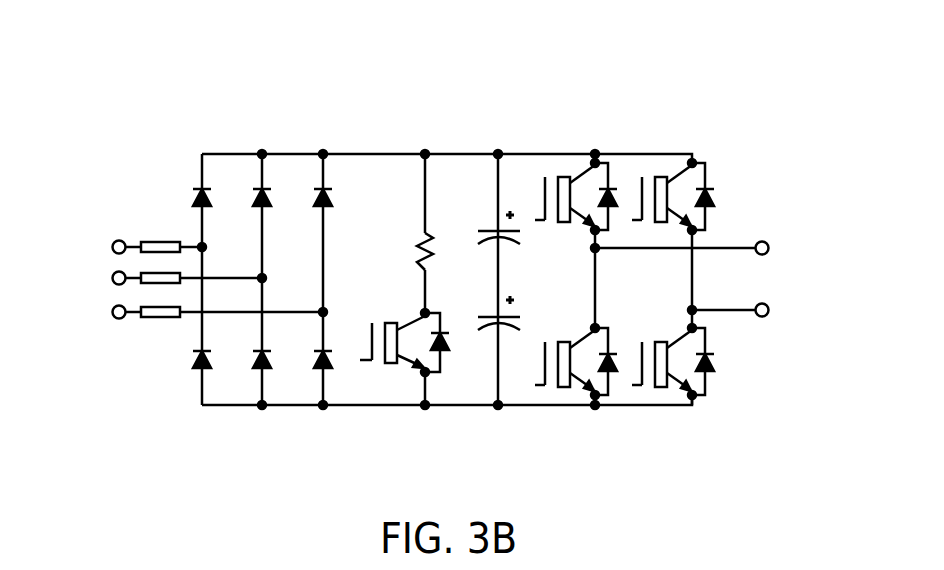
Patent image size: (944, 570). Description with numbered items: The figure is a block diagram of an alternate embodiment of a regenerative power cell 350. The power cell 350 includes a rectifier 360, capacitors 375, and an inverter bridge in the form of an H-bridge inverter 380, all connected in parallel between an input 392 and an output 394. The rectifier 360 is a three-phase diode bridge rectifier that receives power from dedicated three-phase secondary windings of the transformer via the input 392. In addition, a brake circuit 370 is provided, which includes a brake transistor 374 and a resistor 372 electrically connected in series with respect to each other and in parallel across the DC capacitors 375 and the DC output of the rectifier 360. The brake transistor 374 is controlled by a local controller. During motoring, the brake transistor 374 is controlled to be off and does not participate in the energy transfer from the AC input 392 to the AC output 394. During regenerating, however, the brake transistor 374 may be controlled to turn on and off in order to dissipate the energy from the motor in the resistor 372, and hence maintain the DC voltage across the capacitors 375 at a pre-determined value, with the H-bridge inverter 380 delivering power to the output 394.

The power cell 350 is at (173, 72).
The rectifier 360 is at (336, 120).
The brake circuit 370 is at (458, 120).
The resistor 372 is at (420, 245).
The brake transistor 374 is at (403, 313).
The capacitors 375 is at (538, 120).
The H-bridge inverter 380 is at (703, 120).
The input 392 is at (100, 227).
The output 394 is at (797, 225).